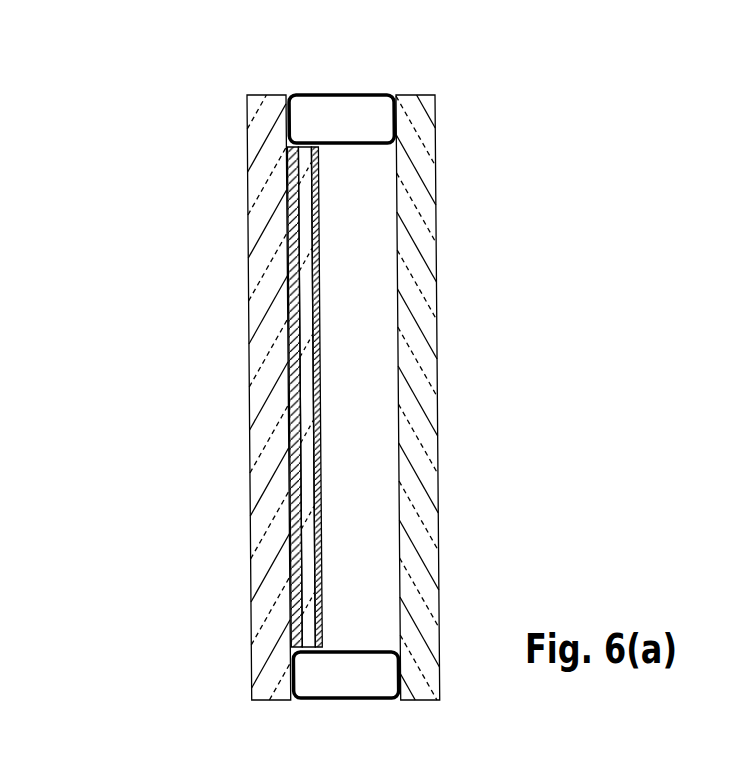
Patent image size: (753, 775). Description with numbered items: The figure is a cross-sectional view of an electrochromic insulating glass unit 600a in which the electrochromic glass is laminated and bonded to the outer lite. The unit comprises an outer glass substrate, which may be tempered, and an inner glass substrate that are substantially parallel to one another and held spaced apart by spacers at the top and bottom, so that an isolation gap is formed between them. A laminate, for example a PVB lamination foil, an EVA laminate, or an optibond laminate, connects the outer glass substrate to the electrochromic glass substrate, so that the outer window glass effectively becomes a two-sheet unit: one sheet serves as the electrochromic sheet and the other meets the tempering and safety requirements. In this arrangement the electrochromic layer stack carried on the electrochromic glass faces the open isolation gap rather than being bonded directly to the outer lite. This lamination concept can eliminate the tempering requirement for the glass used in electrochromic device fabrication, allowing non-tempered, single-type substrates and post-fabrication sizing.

The IG unit 600a is at (354, 355).